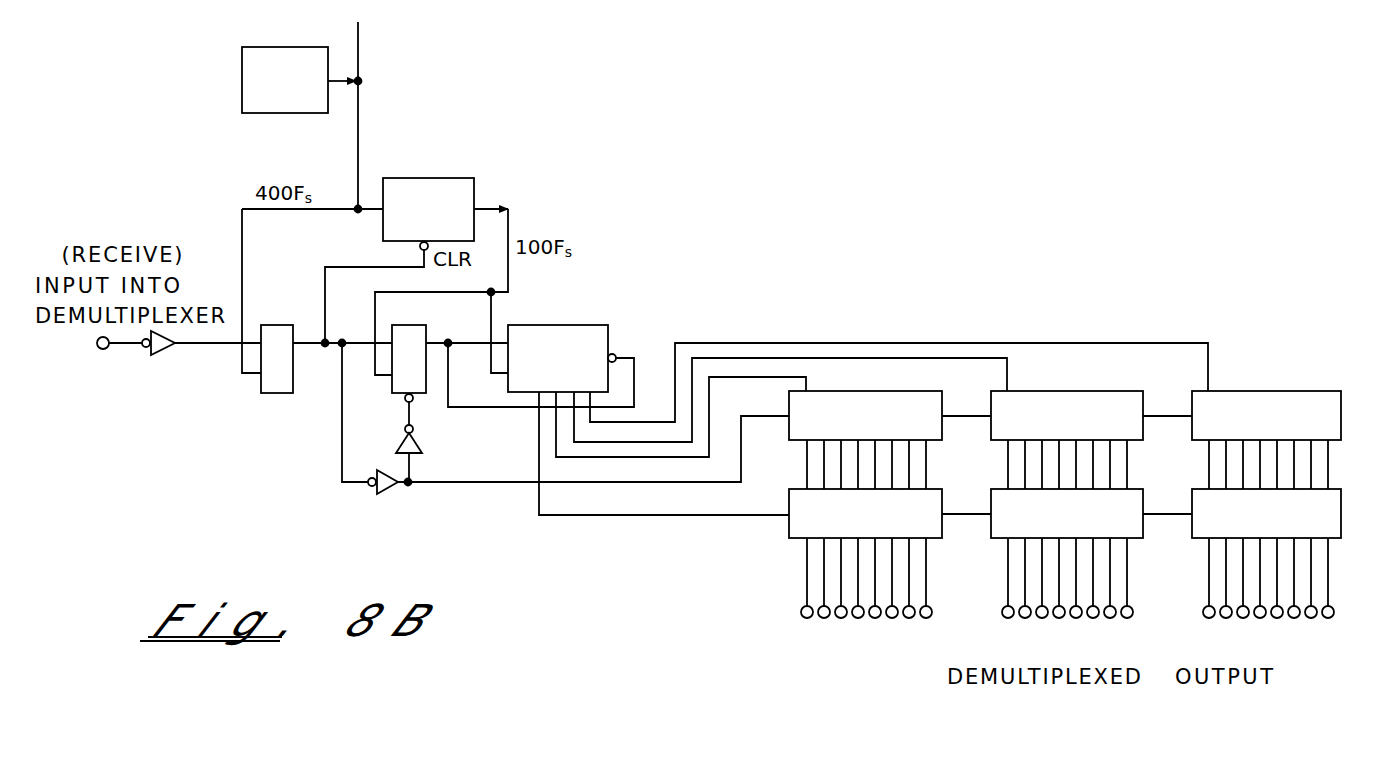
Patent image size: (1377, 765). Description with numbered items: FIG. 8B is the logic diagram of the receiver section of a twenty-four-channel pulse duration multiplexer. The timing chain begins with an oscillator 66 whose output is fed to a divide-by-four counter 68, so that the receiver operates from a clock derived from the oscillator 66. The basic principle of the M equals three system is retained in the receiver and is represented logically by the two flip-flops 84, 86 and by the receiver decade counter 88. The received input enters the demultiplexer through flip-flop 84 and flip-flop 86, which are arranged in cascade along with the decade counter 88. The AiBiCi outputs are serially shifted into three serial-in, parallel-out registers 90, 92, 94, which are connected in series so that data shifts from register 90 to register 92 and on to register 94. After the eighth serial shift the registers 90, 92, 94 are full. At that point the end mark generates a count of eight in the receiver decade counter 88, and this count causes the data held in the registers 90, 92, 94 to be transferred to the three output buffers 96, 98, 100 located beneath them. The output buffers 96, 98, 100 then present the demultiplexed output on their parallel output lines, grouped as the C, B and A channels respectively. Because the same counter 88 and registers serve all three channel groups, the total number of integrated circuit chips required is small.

The oscillator 66 is at (299, 66).
The (÷4) counter 68 is at (428, 196).
The FF (flip-flop) 84 is at (277, 346).
The FF (flip-flop) 86 is at (409, 346).
The decade counter 88 is at (592, 324).
The serial in, parallel out register 90 is at (865, 423).
The serial in, parallel out register 92 is at (1067, 423).
The serial in, parallel out register 94 is at (1266, 423).
The output buffer 96 is at (946, 501).
The output buffer 98 is at (1146, 501).
The output buffer 100 is at (1344, 501).